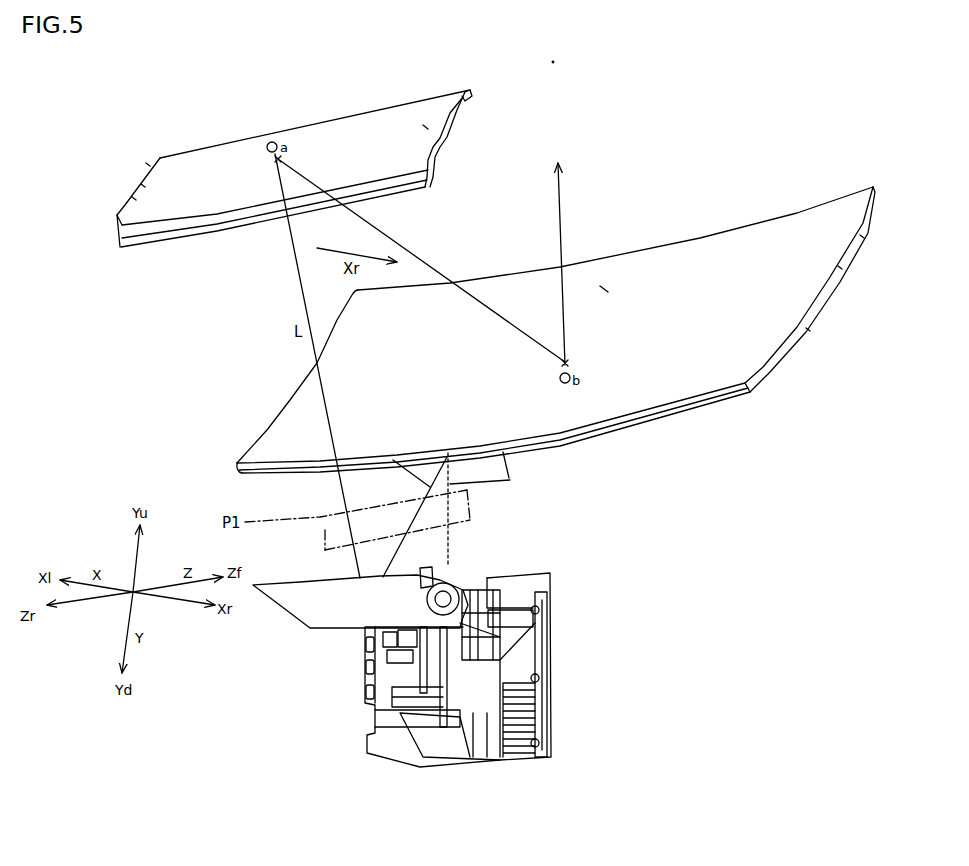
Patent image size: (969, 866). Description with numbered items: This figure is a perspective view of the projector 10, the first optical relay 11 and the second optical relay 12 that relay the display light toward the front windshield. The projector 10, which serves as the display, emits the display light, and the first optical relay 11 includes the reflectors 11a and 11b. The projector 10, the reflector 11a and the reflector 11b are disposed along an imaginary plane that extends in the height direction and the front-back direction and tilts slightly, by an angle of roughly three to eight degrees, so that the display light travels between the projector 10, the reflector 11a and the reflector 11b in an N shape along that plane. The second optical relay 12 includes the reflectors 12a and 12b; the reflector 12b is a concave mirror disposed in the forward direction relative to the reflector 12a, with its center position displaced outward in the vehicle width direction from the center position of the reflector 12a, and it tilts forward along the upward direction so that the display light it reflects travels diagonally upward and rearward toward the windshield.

The projector 10 is at (549, 573).
The first optical relay 11 is at (556, 407).
The reflector 11a is at (497, 472).
The reflector 11b is at (410, 603).
The second optical relay 12 is at (388, 191).
The reflector 12a is at (450, 130).
The reflector 12b is at (605, 290).